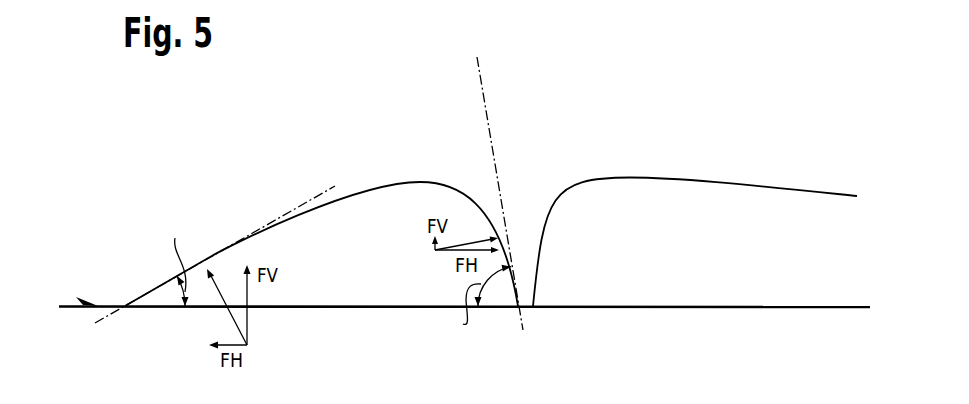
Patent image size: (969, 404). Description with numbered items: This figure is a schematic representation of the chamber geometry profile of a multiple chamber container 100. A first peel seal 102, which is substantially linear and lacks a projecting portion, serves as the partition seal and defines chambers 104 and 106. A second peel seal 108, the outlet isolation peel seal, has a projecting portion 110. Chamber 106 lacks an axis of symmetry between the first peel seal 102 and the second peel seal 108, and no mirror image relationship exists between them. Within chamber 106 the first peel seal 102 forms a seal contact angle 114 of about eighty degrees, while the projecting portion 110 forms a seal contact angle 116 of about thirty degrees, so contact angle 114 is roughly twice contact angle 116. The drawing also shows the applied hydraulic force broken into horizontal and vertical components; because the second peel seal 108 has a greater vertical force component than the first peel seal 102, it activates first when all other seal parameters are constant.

The container 100 is at (213, 109).
The first peel seal 102 is at (530, 315).
The chamber 104 is at (665, 200).
The chamber 106 is at (388, 197).
The second peel seal 108 is at (90, 314).
The projecting portion 110 is at (113, 302).
The seal contact angle 114 is at (490, 293).
The seal contact angle 116 is at (160, 295).